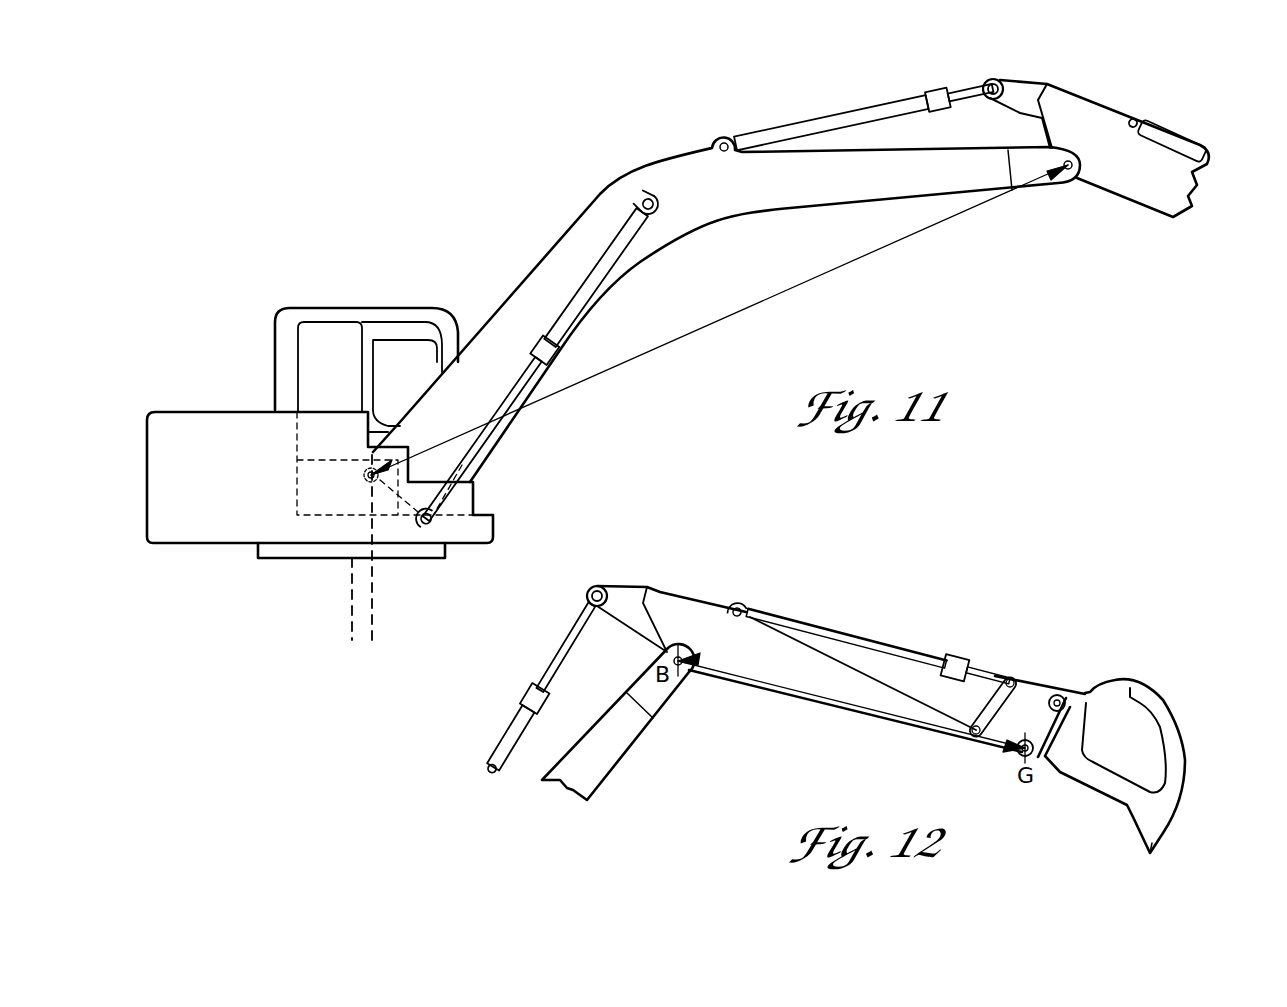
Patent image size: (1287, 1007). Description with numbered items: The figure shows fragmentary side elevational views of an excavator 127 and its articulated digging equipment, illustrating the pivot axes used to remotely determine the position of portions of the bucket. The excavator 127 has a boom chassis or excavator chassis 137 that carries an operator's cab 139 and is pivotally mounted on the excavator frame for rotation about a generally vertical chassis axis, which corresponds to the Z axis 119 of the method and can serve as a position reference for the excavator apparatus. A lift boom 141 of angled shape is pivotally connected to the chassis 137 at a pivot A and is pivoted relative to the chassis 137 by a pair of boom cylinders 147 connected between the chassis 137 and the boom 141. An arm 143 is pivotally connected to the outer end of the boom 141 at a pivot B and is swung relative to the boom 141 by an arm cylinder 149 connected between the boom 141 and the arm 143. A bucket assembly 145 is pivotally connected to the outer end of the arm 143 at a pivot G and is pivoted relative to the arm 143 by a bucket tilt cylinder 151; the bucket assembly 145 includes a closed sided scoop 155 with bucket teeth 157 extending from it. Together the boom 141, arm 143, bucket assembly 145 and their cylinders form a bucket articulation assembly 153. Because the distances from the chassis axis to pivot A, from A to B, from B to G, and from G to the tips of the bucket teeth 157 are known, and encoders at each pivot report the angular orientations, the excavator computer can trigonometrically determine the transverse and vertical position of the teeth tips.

In FIG. 11, the excavator 127 is at (165, 385).
In FIG. 11, the excavator chassis 137 is at (168, 520).
In FIG. 11, the operator's cab 139 is at (372, 312).
In FIG. 11, the Z axis 119 is at (350, 608).
In FIG. 11, the bucket articulation assembly 153 is at (528, 140).
In FIG. 11, the lift boom 141 is at (598, 195).
In FIG. 12, the lift boom 141 is at (618, 770).
In FIG. 11, the boom cylinders 147 is at (510, 440).
In FIG. 11, the arm cylinder 149 is at (830, 118).
In FIG. 12, the arm cylinder 149 is at (485, 745).
In FIG. 11, the arm 143 is at (1135, 190).
In FIG. 12, the arm 143 is at (656, 585).
In FIG. 11, the bucket tilt cylinder 151 is at (1185, 135).
In FIG. 12, the bucket tilt cylinder 151 is at (895, 650).
In FIG. 12, the bucket assembly 145 is at (1112, 690).
In FIG. 12, the closed sided scoop 155 is at (1145, 750).
In FIG. 12, the bucket teeth 157 is at (1155, 840).